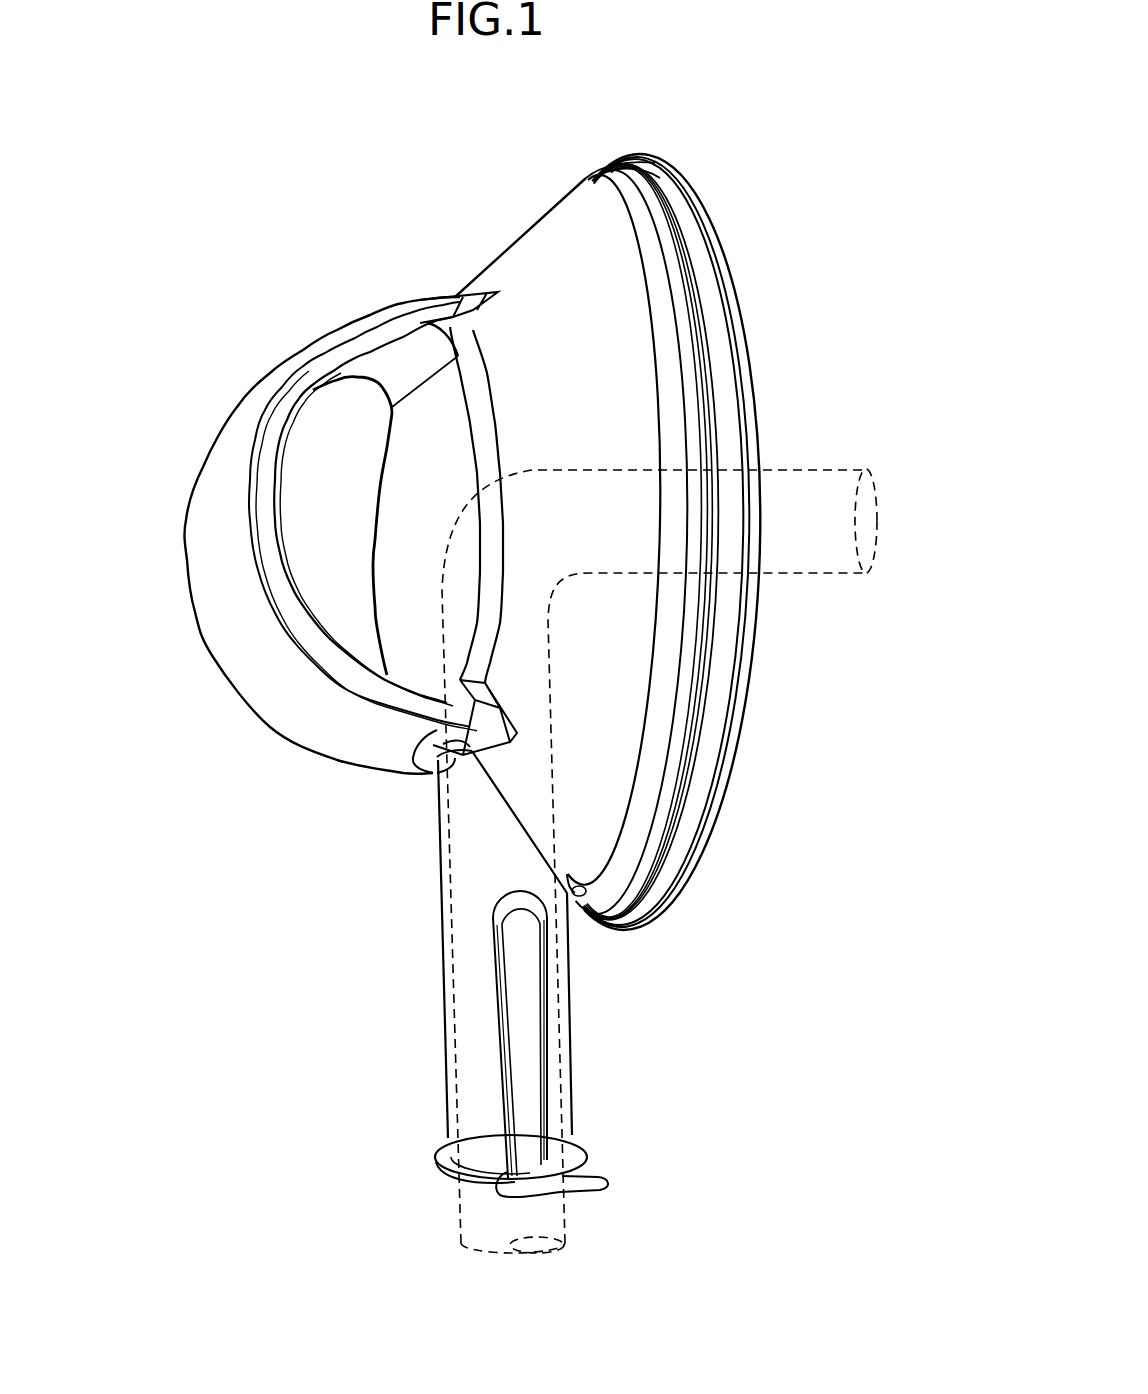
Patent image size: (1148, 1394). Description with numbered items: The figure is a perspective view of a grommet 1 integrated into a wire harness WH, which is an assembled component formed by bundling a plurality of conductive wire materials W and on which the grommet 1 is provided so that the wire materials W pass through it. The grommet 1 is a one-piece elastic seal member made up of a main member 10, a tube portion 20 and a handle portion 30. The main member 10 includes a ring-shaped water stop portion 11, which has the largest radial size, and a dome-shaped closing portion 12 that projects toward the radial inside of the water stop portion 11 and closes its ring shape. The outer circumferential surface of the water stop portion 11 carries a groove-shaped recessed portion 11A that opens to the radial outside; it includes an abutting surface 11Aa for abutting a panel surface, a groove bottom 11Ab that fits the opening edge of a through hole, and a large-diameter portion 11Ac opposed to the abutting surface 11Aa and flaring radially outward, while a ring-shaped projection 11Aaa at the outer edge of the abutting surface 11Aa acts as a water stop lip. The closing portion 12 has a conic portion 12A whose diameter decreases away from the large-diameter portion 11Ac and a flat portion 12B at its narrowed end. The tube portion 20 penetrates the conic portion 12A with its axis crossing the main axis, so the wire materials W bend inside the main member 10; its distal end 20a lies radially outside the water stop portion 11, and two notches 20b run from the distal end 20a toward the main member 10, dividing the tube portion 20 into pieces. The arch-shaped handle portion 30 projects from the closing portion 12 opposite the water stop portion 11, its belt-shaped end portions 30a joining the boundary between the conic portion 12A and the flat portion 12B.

The grommet 1 is at (432, 1103).
The main member 10 is at (528, 205).
The water stop portion 11 is at (676, 504).
The recessed portion 11A is at (652, 160).
The abutting surface 11Aa is at (652, 203).
The groove bottom 11Ab is at (673, 253).
The large-diameter portion 11Ac is at (588, 177).
The projection 11Aaa is at (612, 170).
The closing portion 12 is at (352, 430).
The conic portion 12A is at (532, 277).
The flat portion 12B is at (420, 426).
The tube portion 20 is at (568, 976).
The distal end 20a is at (572, 1180).
The notch 20b is at (535, 1015).
The handle portion 30 is at (207, 663).
The end portion 30a is at (462, 298).
The wire material W is at (450, 1213).
The wire harness WH is at (271, 1055).